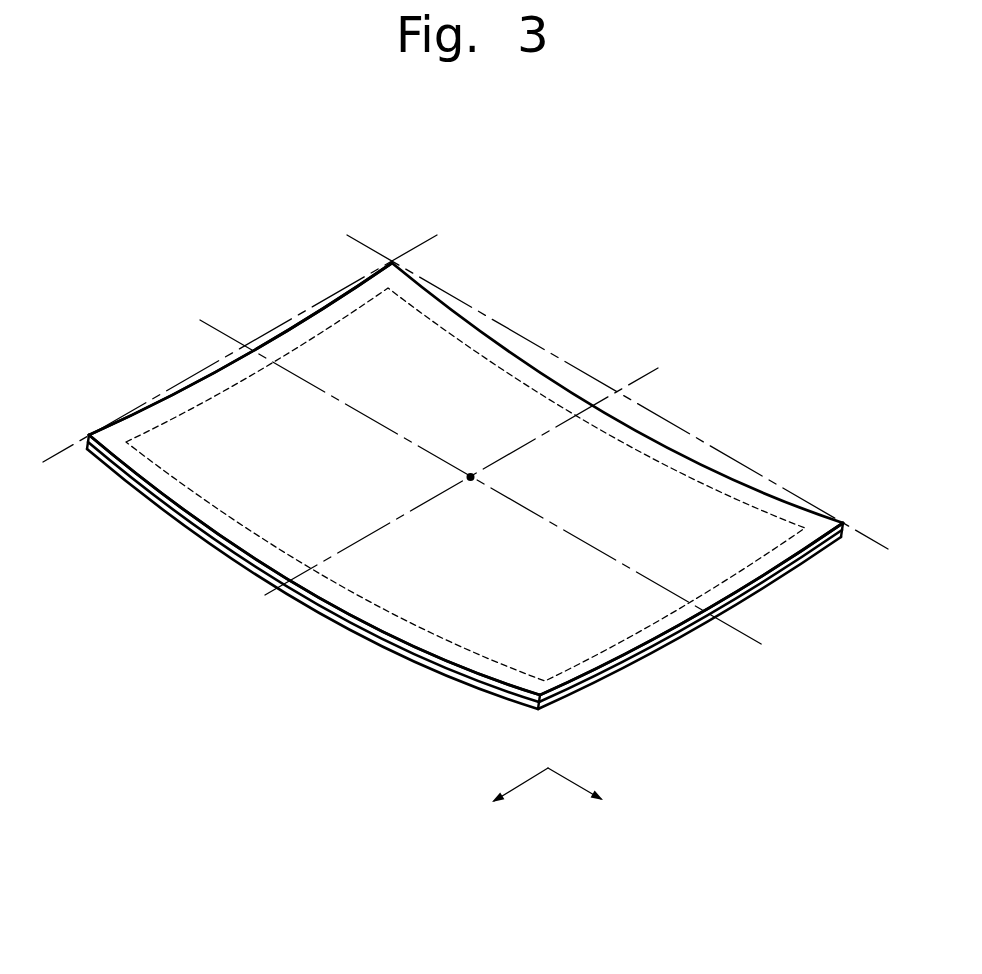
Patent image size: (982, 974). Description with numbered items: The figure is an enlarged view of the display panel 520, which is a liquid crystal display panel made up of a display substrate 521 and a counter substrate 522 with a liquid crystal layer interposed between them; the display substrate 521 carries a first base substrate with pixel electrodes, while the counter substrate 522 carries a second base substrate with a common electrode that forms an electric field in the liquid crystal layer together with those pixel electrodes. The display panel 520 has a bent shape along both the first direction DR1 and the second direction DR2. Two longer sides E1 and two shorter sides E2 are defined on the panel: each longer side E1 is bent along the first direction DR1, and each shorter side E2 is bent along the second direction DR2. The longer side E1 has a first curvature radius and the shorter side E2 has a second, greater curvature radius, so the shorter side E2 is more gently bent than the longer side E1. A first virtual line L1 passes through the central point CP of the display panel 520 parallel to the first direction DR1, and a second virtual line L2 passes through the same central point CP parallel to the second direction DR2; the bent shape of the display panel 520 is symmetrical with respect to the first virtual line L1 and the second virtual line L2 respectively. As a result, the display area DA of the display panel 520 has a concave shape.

The display panel 520 is at (465, 486).
The display substrate 521 is at (247, 558).
The counter substrate 522 is at (147, 586).
The longer side E1 is at (392, 642).
The shorter side E2 is at (173, 393).
The display area DA is at (617, 647).
The first virtual line L1 is at (753, 638).
The second virtual line L2 is at (658, 368).
The central point CP is at (471, 474).
The first direction DR1 is at (596, 793).
The second direction DR2 is at (499, 793).